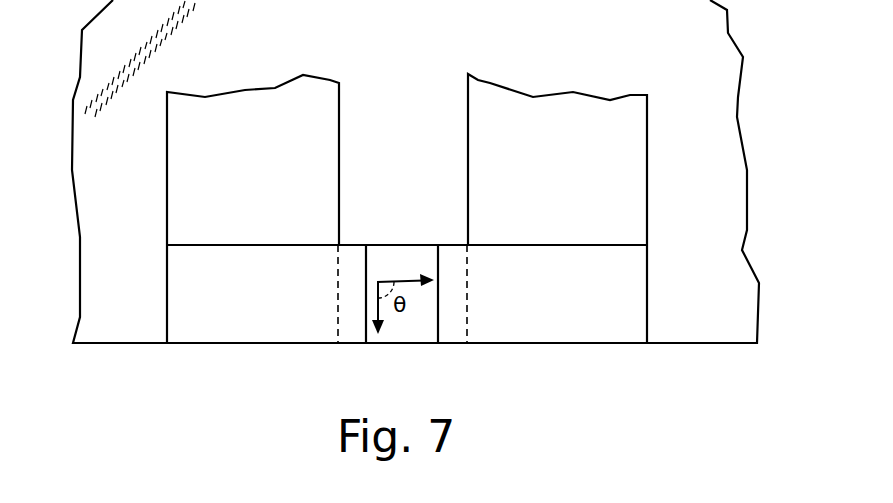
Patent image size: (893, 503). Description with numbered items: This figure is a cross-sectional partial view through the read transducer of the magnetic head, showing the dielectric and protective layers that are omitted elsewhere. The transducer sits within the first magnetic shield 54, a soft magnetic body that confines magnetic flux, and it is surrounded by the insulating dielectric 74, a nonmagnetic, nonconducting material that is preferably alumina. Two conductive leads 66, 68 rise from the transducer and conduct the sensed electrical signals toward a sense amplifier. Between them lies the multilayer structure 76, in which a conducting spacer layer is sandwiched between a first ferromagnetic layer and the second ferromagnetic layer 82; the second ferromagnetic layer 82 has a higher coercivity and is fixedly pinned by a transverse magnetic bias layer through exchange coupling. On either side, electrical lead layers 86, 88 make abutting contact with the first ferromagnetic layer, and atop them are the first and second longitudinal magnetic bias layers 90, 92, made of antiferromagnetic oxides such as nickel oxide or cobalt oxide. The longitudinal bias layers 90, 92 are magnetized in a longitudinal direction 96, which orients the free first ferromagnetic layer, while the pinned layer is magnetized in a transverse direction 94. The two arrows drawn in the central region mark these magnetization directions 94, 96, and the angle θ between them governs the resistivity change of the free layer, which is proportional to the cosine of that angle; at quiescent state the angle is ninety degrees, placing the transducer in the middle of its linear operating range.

The first magnetic shield 54 is at (716, 178).
The conductive lead 66 is at (260, 171).
The conductive lead 68 is at (566, 176).
The insulating dielectric 74 is at (125, 343).
The multilayer structure 76 is at (382, 220).
The second ferromagnetic layer 82 is at (405, 270).
The electrical lead layer 86 is at (204, 292).
The electrical lead layer 88 is at (608, 295).
The first longitudinal magnetic bias layer 90 is at (252, 312).
The second longitudinal magnetic bias layer 92 is at (565, 316).
The magnetization direction of transverse magnetic bias layer 94 is at (366, 307).
The longitudinal magnetization direction 96 is at (428, 274).